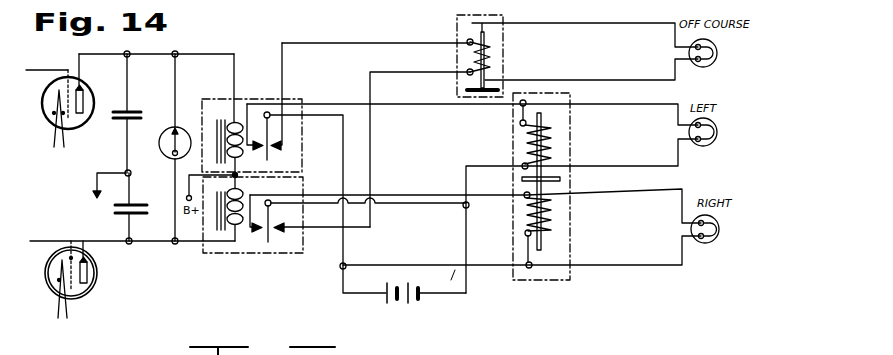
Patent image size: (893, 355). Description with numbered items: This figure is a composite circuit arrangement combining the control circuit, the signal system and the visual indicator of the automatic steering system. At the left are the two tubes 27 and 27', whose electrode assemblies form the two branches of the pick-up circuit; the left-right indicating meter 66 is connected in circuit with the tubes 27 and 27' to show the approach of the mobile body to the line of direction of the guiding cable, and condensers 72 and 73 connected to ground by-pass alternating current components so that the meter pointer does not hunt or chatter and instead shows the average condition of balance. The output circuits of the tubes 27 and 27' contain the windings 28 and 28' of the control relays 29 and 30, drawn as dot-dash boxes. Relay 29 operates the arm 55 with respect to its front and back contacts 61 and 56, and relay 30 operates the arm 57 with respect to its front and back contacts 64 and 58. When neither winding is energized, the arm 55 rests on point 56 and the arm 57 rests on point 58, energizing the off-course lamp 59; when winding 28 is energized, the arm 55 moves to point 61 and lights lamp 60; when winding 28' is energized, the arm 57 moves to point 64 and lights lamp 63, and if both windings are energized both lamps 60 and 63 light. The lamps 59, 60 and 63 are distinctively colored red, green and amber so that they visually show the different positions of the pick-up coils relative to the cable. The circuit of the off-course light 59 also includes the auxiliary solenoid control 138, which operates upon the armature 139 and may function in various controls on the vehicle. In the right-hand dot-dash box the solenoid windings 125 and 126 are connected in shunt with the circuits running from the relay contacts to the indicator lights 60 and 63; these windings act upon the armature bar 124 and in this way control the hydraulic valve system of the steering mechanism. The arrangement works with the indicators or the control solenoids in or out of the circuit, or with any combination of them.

The tube 27 is at (55, 100).
The tube 27' is at (58, 266).
The condenser 72 is at (147, 112).
The condenser 73 is at (157, 197).
The visual indicating meter 66 is at (182, 120).
The relay coil 28 is at (238, 108).
The relay coil 28' is at (216, 237).
The relay 29 is at (273, 97).
The relay 30 is at (281, 258).
The relay arm 55 is at (270, 127).
The contact point 56 is at (276, 152).
The contact point 61 is at (253, 150).
The relay arm 57 is at (268, 244).
The contact point 58 is at (283, 224).
The contact point 64 is at (263, 231).
The auxiliary solenoid control 138 is at (487, 50).
The armature 139 is at (500, 80).
The armature bar 124 is at (560, 179).
The solenoid winding 125 is at (556, 139).
The solenoid winding 126 is at (556, 228).
The off-course indicating lamp 59 is at (718, 67).
The indicator lamp 60 is at (728, 130).
The indicator lamp 63 is at (728, 240).